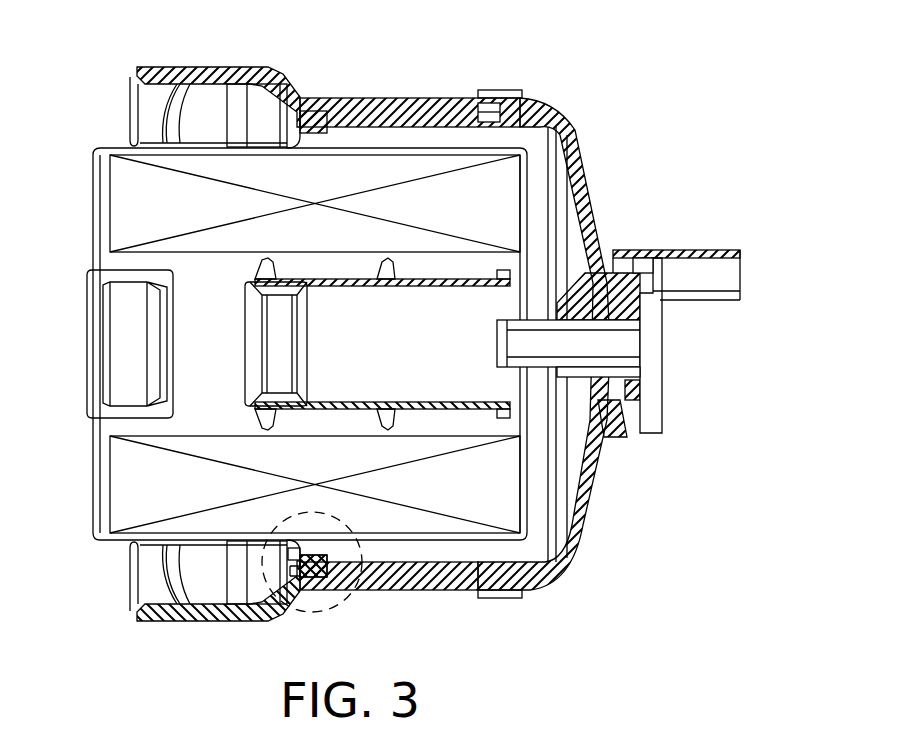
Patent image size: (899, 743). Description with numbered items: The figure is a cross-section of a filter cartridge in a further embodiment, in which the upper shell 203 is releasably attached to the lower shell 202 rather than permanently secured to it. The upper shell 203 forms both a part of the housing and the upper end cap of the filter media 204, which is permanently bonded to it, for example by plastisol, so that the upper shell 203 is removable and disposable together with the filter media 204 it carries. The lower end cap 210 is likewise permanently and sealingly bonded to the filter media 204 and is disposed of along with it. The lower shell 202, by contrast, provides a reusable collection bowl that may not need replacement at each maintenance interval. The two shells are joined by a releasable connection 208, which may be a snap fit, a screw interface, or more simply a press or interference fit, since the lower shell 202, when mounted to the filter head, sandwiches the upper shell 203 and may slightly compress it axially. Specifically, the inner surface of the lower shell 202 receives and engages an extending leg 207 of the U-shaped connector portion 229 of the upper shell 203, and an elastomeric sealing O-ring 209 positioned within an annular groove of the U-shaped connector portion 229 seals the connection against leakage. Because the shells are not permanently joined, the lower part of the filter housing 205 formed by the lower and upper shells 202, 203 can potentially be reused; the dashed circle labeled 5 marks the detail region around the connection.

The filter housing 205 is at (390, 74).
The filter media 204 is at (460, 190).
The lower end cap 210 is at (525, 183).
The upper shell 203 is at (122, 540).
The lower shell 202 is at (458, 582).
The U-shaped connector portion 229 is at (340, 566).
The extending leg 207 is at (288, 560).
The releasable connection 208 is at (285, 579).
The elastomeric sealing O-ring 209 is at (316, 582).
The detail region of FIG. 5 is at (352, 613).